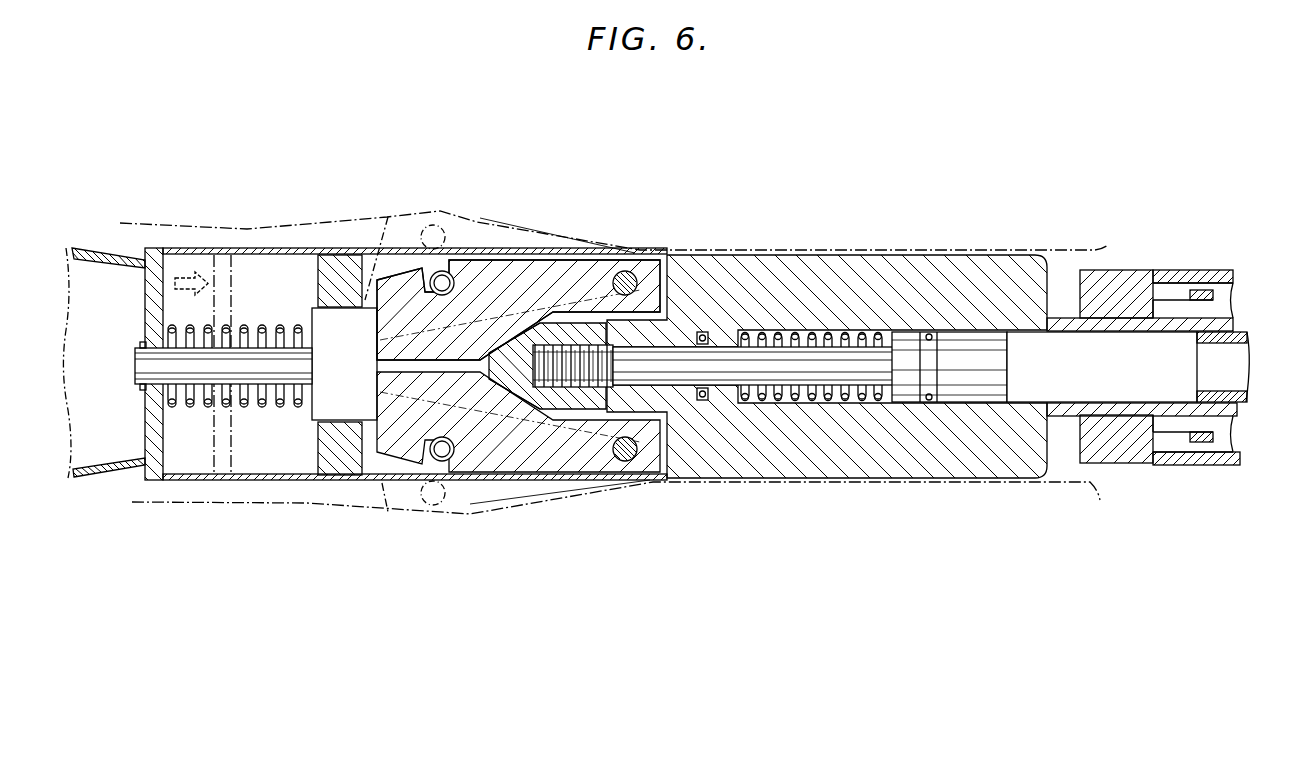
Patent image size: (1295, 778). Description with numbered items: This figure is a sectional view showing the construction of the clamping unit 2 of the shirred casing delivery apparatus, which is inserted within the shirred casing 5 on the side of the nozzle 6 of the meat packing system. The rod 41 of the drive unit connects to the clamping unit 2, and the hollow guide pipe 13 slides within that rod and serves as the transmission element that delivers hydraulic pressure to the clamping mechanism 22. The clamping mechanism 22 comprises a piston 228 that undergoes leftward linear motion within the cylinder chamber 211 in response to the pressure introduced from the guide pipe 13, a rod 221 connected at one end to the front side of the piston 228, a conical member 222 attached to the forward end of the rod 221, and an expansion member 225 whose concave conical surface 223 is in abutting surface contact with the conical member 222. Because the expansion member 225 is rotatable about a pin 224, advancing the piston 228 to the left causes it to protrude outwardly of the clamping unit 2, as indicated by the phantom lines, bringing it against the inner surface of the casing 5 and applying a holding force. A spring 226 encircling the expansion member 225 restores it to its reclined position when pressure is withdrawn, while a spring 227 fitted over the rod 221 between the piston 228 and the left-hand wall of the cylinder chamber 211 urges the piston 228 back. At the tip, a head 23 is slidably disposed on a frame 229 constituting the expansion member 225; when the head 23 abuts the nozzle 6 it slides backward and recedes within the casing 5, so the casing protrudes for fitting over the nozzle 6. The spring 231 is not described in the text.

The clamping unit 2 is at (592, 218).
The shirred casing 5 is at (232, 228).
The nozzle 6 is at (110, 480).
The guide pipe 13 is at (1255, 330).
The clamping mechanism 22 is at (543, 478).
The head 23 is at (157, 480).
The rod 41 is at (1063, 318).
The cylinder chamber 211 is at (1020, 340).
The rod 221 is at (728, 372).
The conical member 222 is at (577, 403).
The concave conical surface 223 is at (495, 390).
The pin 224 is at (634, 274).
The expansion member 225 is at (545, 262).
The spring 226 is at (437, 272).
The spring 227 is at (823, 397).
The piston 228 is at (907, 387).
The frame 229 is at (337, 458).
The spring 231 is at (250, 407).